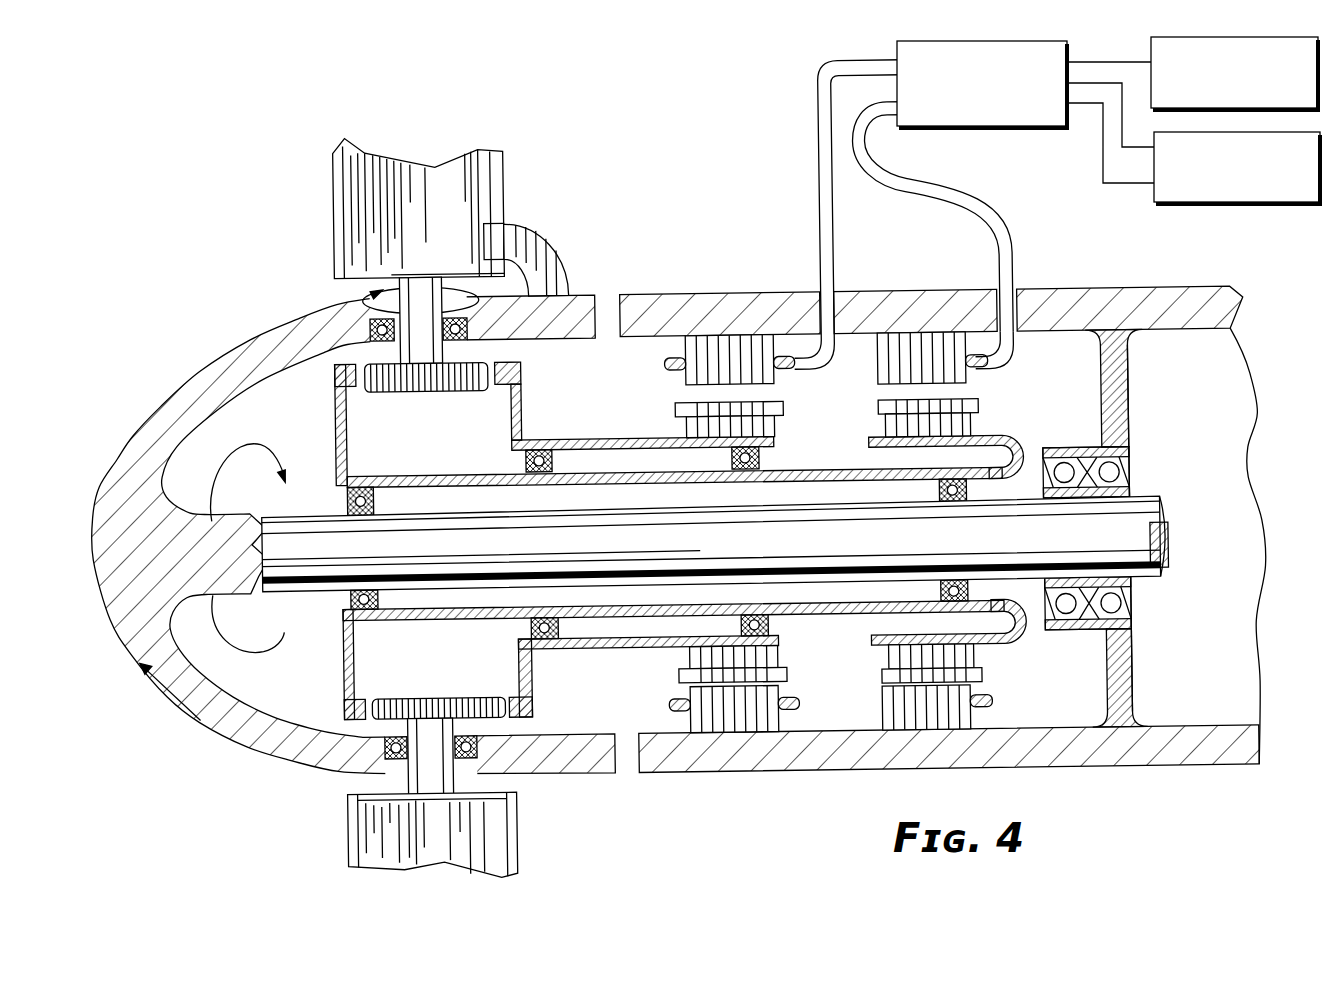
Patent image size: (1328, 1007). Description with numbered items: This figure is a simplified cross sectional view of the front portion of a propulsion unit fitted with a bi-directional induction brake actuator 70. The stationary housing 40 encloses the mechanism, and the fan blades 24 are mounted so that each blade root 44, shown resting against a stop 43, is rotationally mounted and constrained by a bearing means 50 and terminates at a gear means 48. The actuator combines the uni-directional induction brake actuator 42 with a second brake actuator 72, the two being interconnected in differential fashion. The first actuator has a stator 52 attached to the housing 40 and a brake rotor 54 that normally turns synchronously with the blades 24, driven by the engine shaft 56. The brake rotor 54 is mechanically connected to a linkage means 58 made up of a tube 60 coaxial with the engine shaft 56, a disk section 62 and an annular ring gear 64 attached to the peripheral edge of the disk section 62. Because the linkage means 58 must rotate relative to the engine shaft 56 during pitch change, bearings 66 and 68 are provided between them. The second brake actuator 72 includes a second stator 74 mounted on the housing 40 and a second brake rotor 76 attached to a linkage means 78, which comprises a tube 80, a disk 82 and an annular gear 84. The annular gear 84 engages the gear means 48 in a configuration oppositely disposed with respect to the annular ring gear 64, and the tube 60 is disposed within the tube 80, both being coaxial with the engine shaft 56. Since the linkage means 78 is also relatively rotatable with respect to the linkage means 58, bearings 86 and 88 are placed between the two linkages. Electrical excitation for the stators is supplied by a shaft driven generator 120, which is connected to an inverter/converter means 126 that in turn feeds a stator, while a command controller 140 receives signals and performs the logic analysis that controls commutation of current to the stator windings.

The fan blade 24 is at (348, 193).
The stationary housing 40 is at (1228, 276).
The uni-directional induction brake actuator 42 is at (1022, 377).
The stop 43 is at (542, 245).
The root 44 is at (388, 345).
The gear means 48 is at (431, 390).
The bearing means 50 is at (380, 740).
The stator 52 is at (930, 337).
The brake rotor 54 is at (974, 433).
The engine shaft 56 is at (1135, 506).
The linkage means 58 is at (802, 620).
The tube 60 is at (866, 460).
The disk section 62 is at (357, 685).
The annular ring gear 64 is at (352, 383).
The bearing 66 is at (953, 506).
The bearing 68 is at (362, 587).
The bi-directional induction brake actuator 70 is at (825, 287).
The second brake actuator 72 is at (654, 697).
The second stator 74 is at (710, 337).
The second brake rotor 76 is at (777, 416).
The linkage means 78 is at (667, 401).
The tube 80 is at (575, 439).
The disk 82 is at (532, 386).
The annular gear 84 is at (501, 384).
The bearing 86 is at (730, 466).
The bearing 88 is at (570, 469).
The shaft driven generator 120 is at (1270, 181).
The inverter/converter means 126 is at (1012, 98).
The command controller 140 is at (1268, 86).